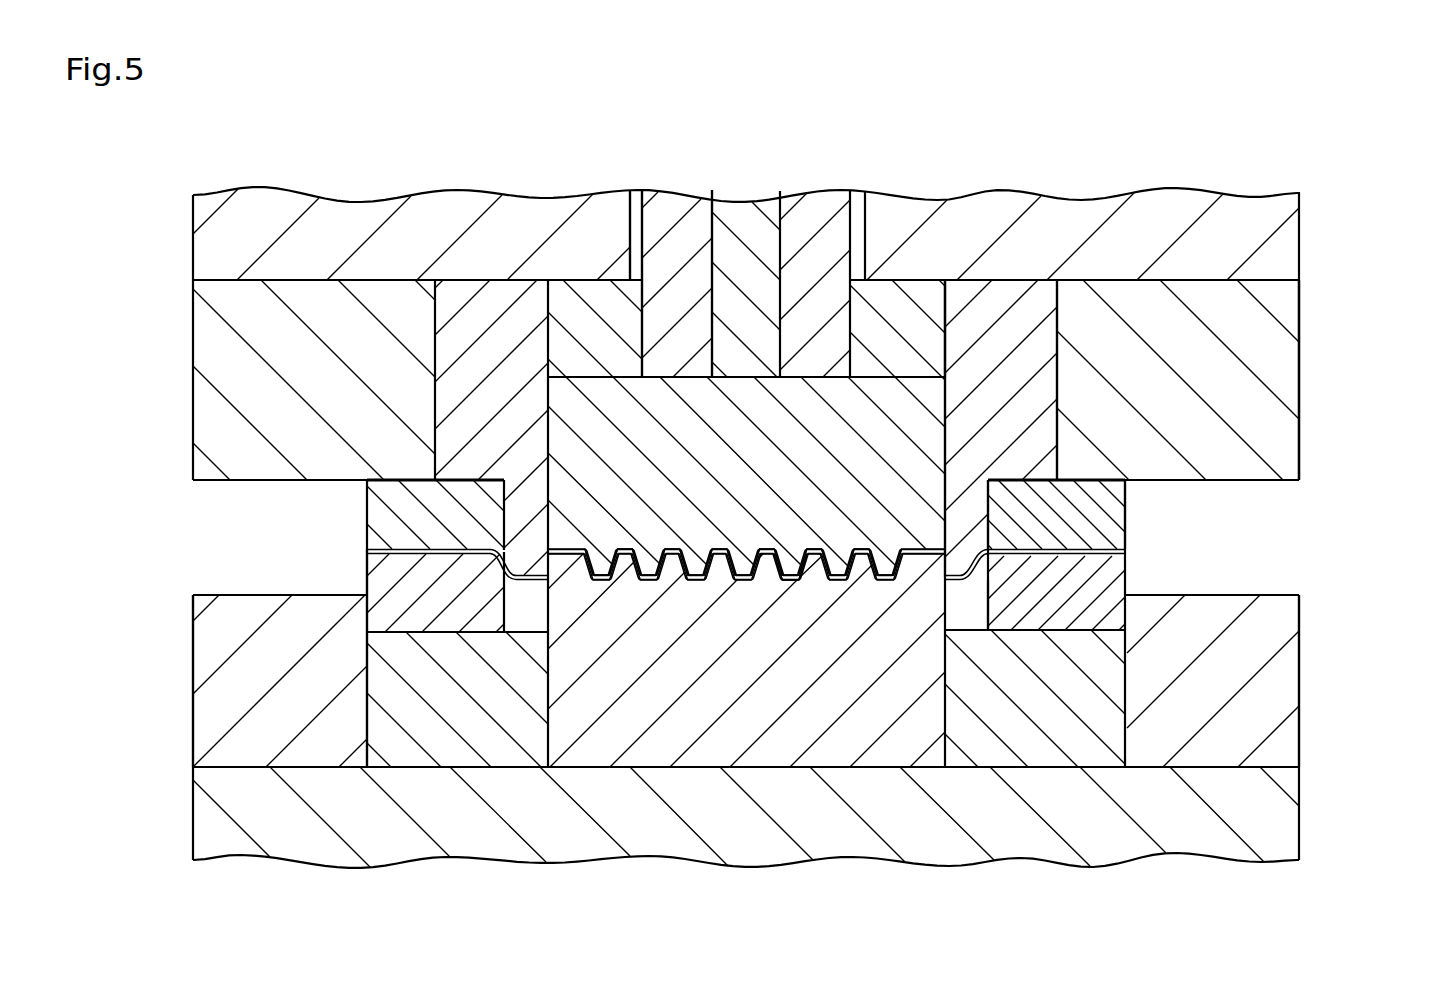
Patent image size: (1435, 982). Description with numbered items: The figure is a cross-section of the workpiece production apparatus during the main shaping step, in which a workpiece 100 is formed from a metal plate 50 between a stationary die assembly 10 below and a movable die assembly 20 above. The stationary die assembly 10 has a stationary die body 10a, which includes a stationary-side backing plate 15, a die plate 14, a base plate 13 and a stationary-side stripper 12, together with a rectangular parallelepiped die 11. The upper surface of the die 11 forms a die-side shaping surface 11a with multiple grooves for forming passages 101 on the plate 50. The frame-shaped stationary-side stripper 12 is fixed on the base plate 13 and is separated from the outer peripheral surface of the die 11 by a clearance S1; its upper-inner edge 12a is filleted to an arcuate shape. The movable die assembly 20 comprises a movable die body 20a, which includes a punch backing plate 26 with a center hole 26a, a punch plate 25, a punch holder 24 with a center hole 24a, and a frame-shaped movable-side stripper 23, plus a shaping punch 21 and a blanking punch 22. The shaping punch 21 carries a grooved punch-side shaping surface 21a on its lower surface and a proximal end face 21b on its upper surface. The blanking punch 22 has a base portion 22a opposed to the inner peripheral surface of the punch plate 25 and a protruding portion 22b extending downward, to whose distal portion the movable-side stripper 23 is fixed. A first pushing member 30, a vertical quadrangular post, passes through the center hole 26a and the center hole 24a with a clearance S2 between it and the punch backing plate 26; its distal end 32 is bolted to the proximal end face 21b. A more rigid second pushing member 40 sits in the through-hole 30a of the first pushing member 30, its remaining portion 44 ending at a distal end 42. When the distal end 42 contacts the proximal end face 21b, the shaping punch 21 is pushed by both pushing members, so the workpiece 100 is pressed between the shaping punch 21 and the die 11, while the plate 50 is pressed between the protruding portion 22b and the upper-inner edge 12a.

The stationary die assembly 10 is at (1336, 720).
The stationary die body 10a is at (1310, 654).
The die 11 is at (947, 670).
The die-side shaping surface 11a is at (700, 581).
The stationary-side stripper 12 is at (983, 616).
The upper-inner edge 12a is at (1009, 560).
The base plate 13 is at (533, 618).
The die plate 14 is at (275, 595).
The stationary-side backing plate 15 is at (193, 812).
The movable die assembly 20 is at (1318, 181).
The movable die body 20a is at (1311, 316).
The shaping punch 21 is at (947, 473).
The punch-side shaping surface 21a is at (690, 548).
The proximal end face 21b is at (900, 375).
The blanking punch 22 is at (1045, 428).
The base portion 22a is at (1058, 375).
The protruding portion 22b is at (990, 525).
The movable-side stripper 23 is at (1126, 507).
The punch holder 24 is at (548, 341).
The center hole 24a is at (650, 357).
The punch plate 25 is at (1300, 388).
The punch backing plate 26 is at (1300, 225).
The center hole 26a is at (861, 228).
The first pushing member 30 is at (864, 237).
The through-hole 30a is at (720, 330).
The distal end 32 is at (823, 378).
The second pushing member 40 is at (711, 218).
The distal end 42 is at (735, 378).
The remaining portion 44 is at (780, 213).
The metal plate 50 is at (1126, 552).
The workpiece 100 is at (854, 593).
The passages 101 is at (805, 581).
The clearance S1 is at (965, 593).
The clearance S2 is at (635, 258).